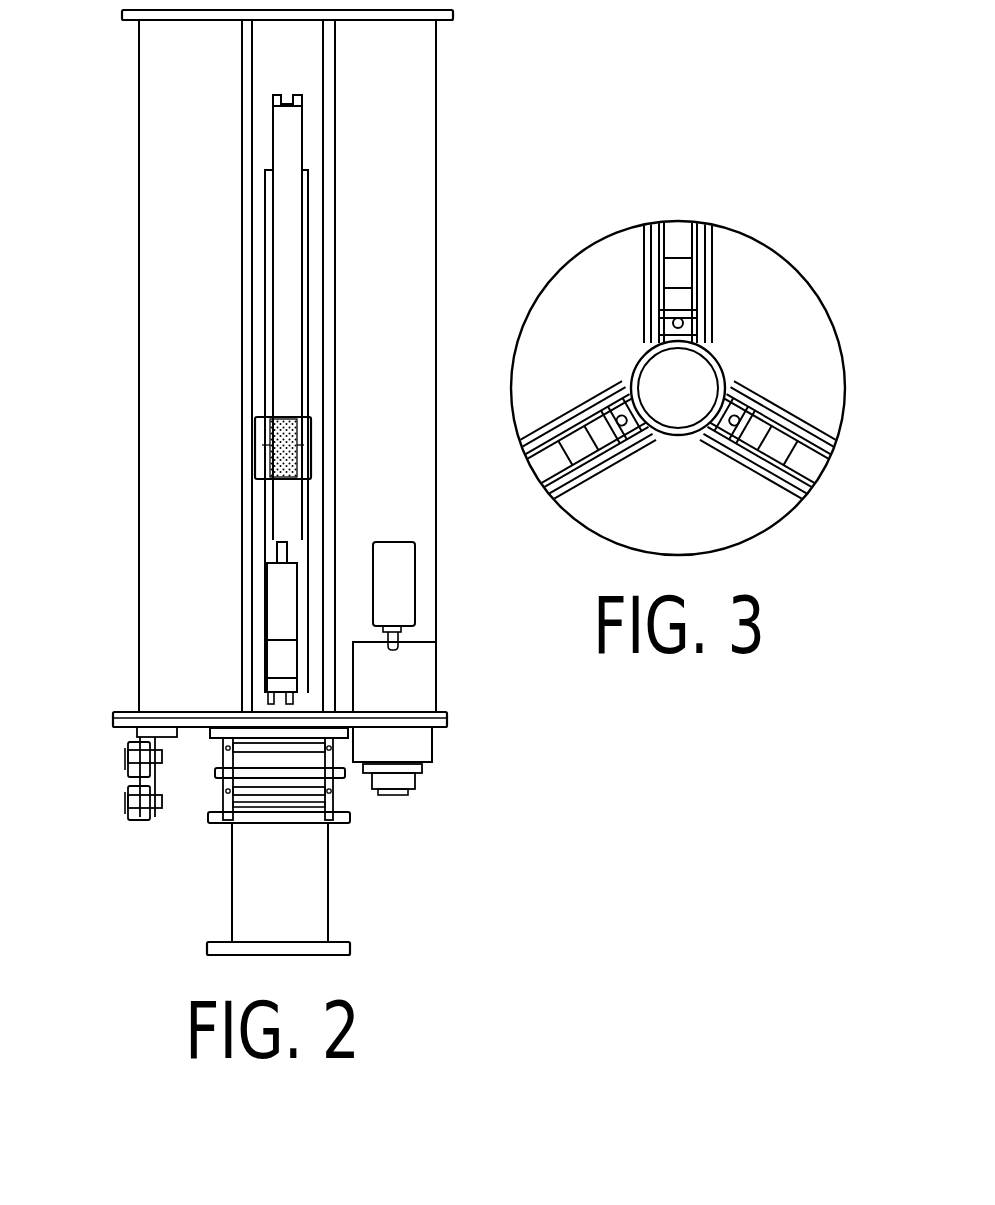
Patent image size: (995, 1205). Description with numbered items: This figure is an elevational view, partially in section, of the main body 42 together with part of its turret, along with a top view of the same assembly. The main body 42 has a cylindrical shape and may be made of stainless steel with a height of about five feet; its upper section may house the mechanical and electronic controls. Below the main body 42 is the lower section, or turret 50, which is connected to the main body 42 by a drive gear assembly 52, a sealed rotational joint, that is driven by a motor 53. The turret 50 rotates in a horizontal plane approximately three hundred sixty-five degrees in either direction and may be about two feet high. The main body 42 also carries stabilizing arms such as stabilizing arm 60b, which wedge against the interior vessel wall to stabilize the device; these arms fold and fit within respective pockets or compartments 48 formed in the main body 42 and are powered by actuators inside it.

In FIG. 2, the main body 42 is at (180, 140).
In FIG. 3, the main body 42 is at (750, 303).
In FIG. 2, the pockets or compartments 48 is at (290, 68).
In FIG. 2, the stabilizing arm 60b is at (277, 370).
In FIG. 3, the stabilizing arm 60b is at (818, 465).
In FIG. 2, the motor 53 is at (393, 577).
In FIG. 2, the drive gear assembly 52 is at (425, 778).
In FIG. 2, the lower section/turret 50 is at (207, 794).